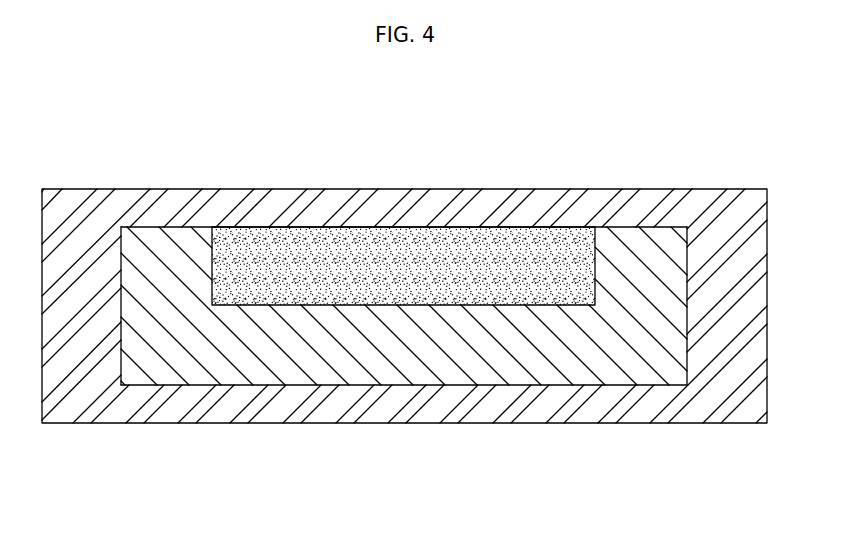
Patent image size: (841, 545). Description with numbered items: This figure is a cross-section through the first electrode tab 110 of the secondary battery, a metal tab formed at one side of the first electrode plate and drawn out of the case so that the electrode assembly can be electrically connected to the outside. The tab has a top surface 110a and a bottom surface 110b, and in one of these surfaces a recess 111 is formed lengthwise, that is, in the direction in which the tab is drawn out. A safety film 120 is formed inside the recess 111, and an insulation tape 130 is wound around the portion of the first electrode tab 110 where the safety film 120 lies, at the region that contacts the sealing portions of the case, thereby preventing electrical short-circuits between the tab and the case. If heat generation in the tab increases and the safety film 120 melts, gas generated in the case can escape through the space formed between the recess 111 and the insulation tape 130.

The first electrode tab 110 is at (636, 245).
The top surface 110a is at (665, 226).
The bottom surface 110b is at (615, 387).
The recess 111 is at (209, 269).
The safety film 120 is at (291, 240).
The insulation tape 130 is at (433, 202).